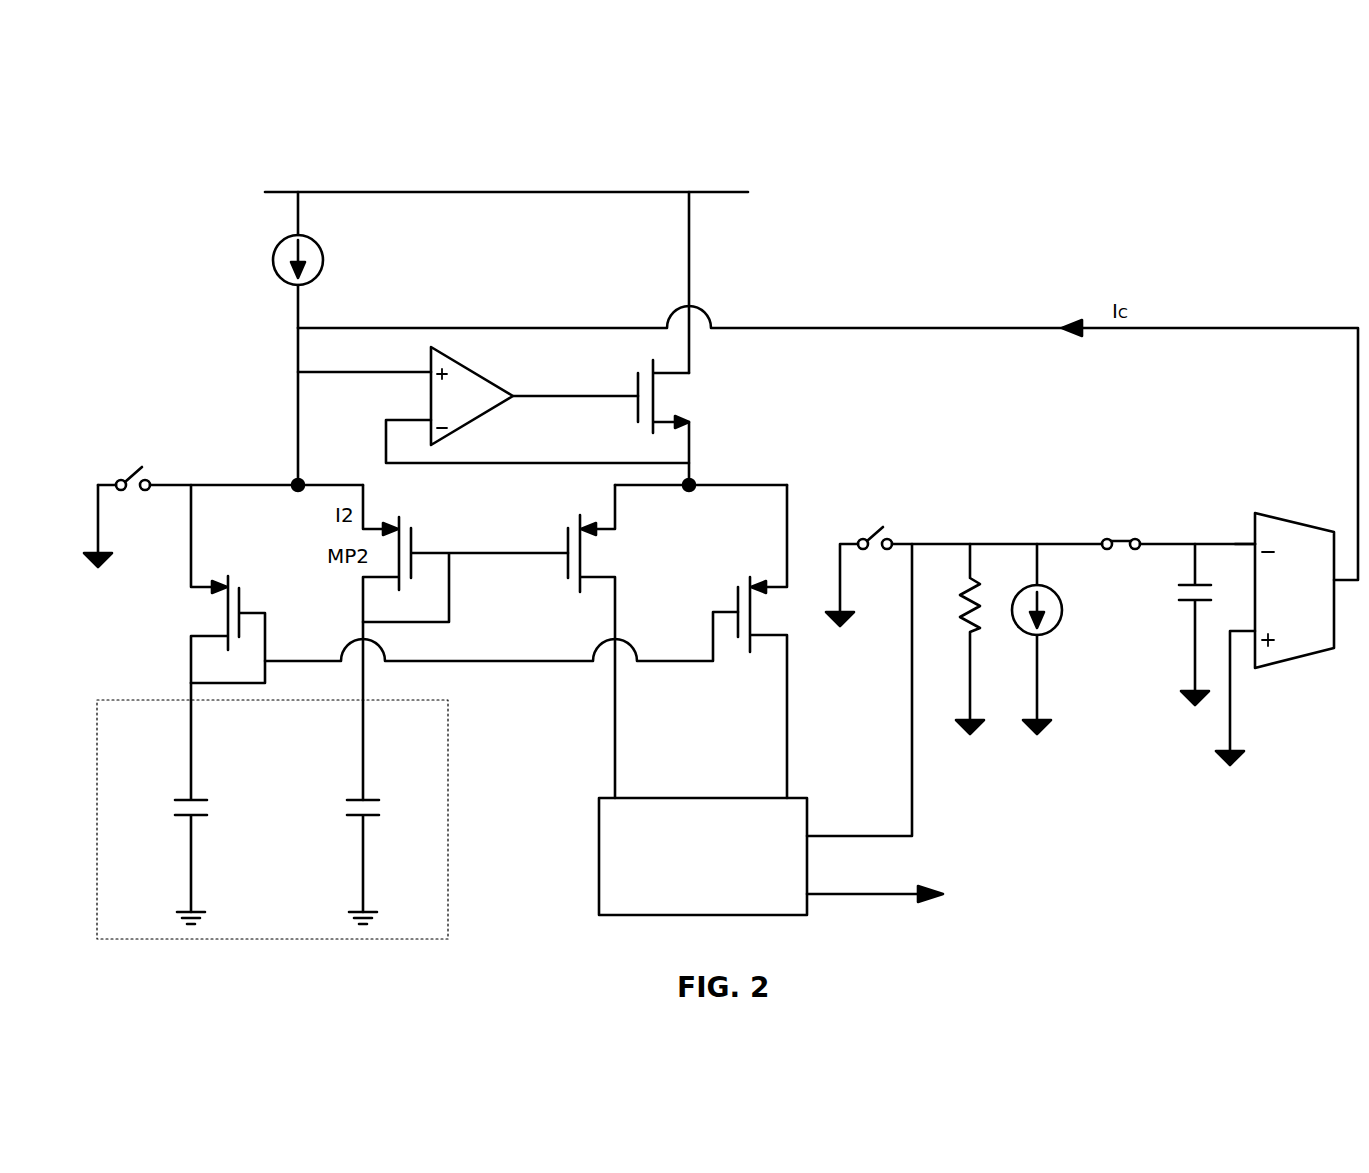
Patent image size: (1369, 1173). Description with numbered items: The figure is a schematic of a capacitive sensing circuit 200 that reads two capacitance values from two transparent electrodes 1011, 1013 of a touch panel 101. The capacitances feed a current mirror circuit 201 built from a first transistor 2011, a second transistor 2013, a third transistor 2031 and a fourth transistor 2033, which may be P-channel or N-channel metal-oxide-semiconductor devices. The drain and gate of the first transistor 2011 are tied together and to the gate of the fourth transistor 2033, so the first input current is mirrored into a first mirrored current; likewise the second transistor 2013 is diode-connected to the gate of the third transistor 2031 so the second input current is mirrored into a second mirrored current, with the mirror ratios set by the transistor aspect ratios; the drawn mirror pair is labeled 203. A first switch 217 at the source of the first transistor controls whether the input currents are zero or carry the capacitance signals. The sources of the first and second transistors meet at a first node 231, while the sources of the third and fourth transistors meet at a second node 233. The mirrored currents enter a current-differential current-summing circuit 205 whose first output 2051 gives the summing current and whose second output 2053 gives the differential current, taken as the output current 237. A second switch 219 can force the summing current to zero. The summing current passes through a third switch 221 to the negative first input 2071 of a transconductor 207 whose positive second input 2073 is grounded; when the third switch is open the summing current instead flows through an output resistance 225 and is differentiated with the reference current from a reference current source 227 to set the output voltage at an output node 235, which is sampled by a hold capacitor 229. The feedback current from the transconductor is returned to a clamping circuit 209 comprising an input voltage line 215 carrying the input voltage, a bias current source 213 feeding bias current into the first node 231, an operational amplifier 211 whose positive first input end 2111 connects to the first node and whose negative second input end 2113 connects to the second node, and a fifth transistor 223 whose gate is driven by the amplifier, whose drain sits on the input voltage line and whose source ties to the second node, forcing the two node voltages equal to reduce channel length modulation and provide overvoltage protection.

The capacitive sensing circuit 200 is at (729, 92).
The touch panel 101 is at (200, 942).
The transparent electrode 1011 is at (193, 822).
The transparent electrode 1013 is at (365, 822).
The current mirror circuit 201 is at (177, 642).
The first transistor (MP1) 2011 is at (245, 605).
The second transistor (MP2) 2013 is at (415, 545).
The current mirror MP21/MP11 203 is at (603, 613).
The third transistor (MP21) 2031 is at (563, 567).
The fourth transistor (MP11) 2033 is at (733, 607).
The current-differential current-summing circuit 205 is at (596, 836).
The first output 2051 is at (810, 828).
The second output 2053 is at (810, 888).
The transconductor 207 is at (1275, 513).
The first input 2071 is at (1253, 540).
The second input 2073 is at (1253, 633).
The clamping circuit 209 is at (668, 283).
The operational amplifier (OPA) 211 is at (482, 372).
The first input end 2111 is at (431, 372).
The second input end 2113 is at (431, 420).
The bias current source 213 is at (323, 257).
The input voltage line 215 is at (485, 192).
The first switch (S1) 217 is at (118, 480).
The second switch (S2) 219 is at (860, 538).
The third switch (S3) 221 is at (1147, 544).
The fifth transistor 223 is at (638, 390).
The output resistance Rout 225 is at (970, 670).
The reference current source 227 is at (1040, 670).
The hold capacitor Csh 229 is at (1194, 608).
The first node (A) 231 is at (302, 478).
The second node (B) 233 is at (693, 490).
The output node 235 is at (1035, 544).
The output current iOUT 237 is at (913, 888).